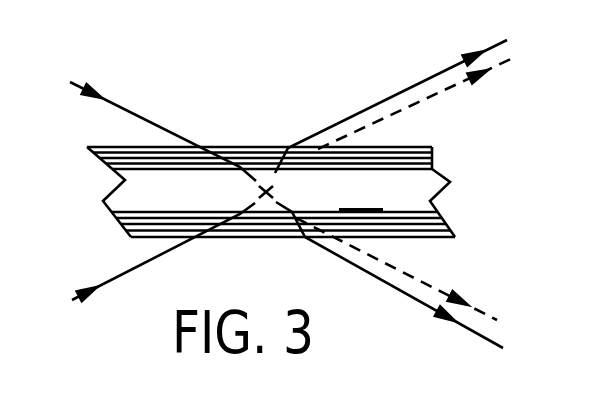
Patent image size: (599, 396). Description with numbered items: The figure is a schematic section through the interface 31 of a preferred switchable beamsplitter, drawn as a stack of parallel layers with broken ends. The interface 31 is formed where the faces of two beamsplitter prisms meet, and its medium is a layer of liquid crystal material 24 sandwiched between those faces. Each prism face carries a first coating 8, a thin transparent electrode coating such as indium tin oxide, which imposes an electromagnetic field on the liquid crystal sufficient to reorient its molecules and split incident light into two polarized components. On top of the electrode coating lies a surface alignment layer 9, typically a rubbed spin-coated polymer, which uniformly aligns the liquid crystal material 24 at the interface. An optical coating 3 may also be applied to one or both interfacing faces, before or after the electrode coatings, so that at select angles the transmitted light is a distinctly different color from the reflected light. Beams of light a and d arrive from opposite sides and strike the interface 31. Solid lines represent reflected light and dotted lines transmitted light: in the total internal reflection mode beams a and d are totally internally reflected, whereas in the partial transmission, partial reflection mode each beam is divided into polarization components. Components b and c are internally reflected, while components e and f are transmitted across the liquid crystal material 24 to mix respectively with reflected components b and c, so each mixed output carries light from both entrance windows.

The optical coating 3 is at (289, 180).
The first coating 8 is at (430, 152).
The surface alignment layer 9 is at (430, 164).
The liquid crystal material 24 is at (361, 192).
The interface 31 is at (108, 207).
The beam of light a is at (150, 121).
The polarization component b is at (403, 92).
The polarization component c is at (401, 286).
The beam of light d is at (151, 262).
The polarization component e is at (428, 94).
The polarization component f is at (410, 276).